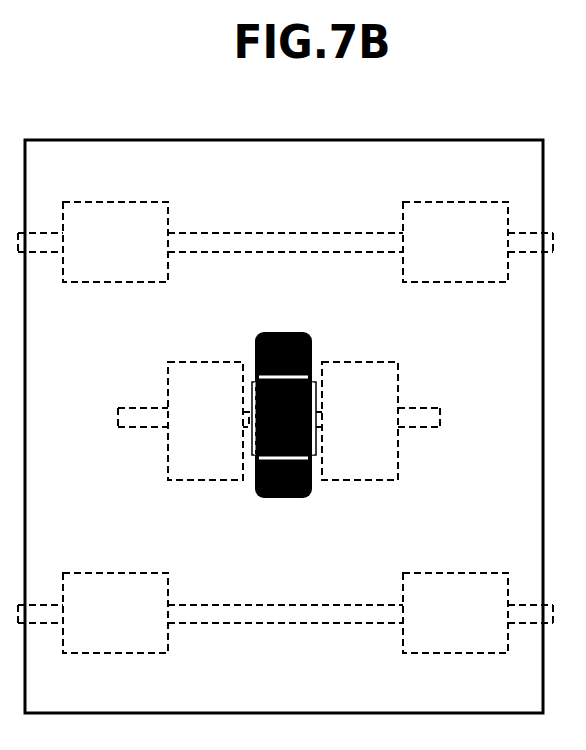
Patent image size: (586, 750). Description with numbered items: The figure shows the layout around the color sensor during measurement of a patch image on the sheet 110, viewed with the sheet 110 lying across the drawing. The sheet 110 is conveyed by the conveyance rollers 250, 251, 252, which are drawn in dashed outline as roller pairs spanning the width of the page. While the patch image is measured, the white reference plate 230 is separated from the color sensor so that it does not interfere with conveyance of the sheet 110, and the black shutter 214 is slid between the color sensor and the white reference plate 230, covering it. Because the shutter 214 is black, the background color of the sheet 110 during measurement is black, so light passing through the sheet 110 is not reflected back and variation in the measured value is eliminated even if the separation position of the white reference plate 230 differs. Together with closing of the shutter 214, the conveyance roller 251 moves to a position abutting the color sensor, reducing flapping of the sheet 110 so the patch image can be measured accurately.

The sheet 110 is at (342, 140).
The conveyance roller 250 is at (108, 202).
The conveyance roller 251 is at (205, 362).
The conveyance roller 252 is at (120, 573).
The shutter 214 is at (283, 332).
The white reference plate 230 is at (312, 382).